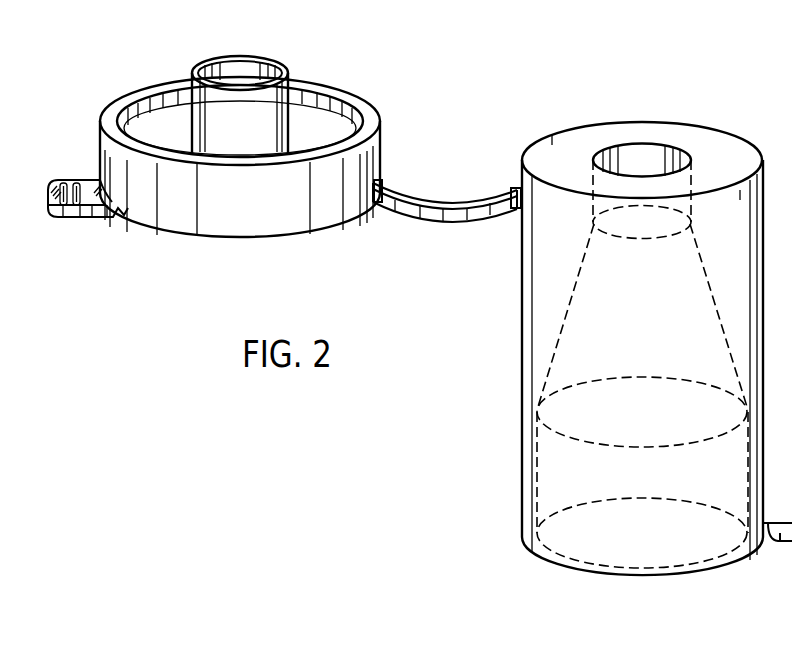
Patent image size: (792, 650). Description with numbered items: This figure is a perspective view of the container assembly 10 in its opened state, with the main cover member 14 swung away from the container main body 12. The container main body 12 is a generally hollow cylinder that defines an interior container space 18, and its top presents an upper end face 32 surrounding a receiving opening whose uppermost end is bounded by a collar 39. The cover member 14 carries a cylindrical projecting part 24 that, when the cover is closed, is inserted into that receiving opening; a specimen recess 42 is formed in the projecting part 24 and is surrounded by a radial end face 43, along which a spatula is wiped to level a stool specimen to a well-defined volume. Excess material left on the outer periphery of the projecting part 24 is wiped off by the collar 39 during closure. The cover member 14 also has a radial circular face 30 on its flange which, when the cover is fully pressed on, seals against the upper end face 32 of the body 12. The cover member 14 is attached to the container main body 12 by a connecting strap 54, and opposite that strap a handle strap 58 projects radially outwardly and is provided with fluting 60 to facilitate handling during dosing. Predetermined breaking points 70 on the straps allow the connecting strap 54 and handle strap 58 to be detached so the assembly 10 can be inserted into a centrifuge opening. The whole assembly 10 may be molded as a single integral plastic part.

The container assembly 10 is at (615, 330).
The container main body 12 is at (521, 372).
The main cover member 14 is at (336, 82).
The interior container space 18 is at (568, 543).
The cylindrical projecting part 24 is at (253, 76).
The radial circular face 30 is at (163, 108).
The upper end face 32 is at (561, 145).
The collar 39 is at (653, 150).
The specimen recess 42 is at (243, 84).
The radial end face 43 is at (193, 72).
The connecting strap 54 is at (446, 214).
The handle strap 58 is at (104, 210).
The fluting 60 is at (80, 183).
The predetermined breaking points 70 is at (379, 202).